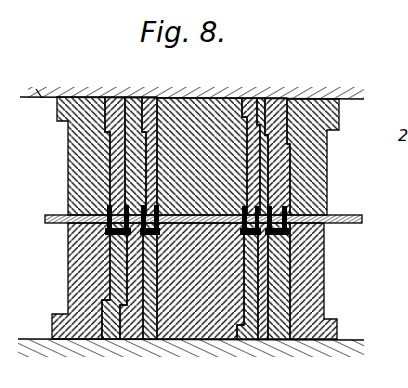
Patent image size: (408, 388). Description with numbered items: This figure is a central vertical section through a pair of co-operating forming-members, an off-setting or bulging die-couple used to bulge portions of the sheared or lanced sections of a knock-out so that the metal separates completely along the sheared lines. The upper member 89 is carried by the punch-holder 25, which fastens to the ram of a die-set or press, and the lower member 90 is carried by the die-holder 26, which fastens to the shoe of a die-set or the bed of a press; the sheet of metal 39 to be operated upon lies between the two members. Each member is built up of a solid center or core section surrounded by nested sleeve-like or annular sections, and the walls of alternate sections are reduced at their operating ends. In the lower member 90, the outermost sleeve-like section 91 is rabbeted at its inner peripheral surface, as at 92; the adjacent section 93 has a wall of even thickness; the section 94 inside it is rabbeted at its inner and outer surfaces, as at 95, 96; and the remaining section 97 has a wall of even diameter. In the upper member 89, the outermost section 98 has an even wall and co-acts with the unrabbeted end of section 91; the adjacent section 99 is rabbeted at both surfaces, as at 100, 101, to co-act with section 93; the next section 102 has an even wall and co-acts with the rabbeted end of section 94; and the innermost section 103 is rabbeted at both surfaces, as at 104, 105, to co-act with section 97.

The punch-holder 25 is at (192, 107).
The die-holder 26 is at (26, 345).
The sheet of metal 39 is at (345, 225).
The upper member of off-setting or bulging dies 89 is at (330, 147).
The lower member of off-setting or bulging dies 90 is at (327, 288).
The outermost sleeve-like section of lower member 91 is at (76, 272).
The rabbet 92 is at (108, 232).
The adjacent sleeve-like section of lower member 93 is at (110, 291).
The sleeve-like section within section 93 94 is at (132, 321).
The rabbet 95 is at (110, 244).
The rabbet 96 is at (158, 237).
The remaining sleeve-like section of lower member 97 is at (147, 301).
The outermost sleeve-like section of upper member 98 is at (78, 135).
The adjacent sleeve-like section of upper member 99 is at (118, 155).
The rabbet 100 is at (105, 197).
The rabbet 101 is at (100, 208).
The next sleeve-like section inwardly of upper member 102 is at (138, 137).
The innermost sleeve-like section of upper member 103 is at (160, 124).
The rabbet 104 is at (158, 208).
The rabbet 105 is at (126, 198).